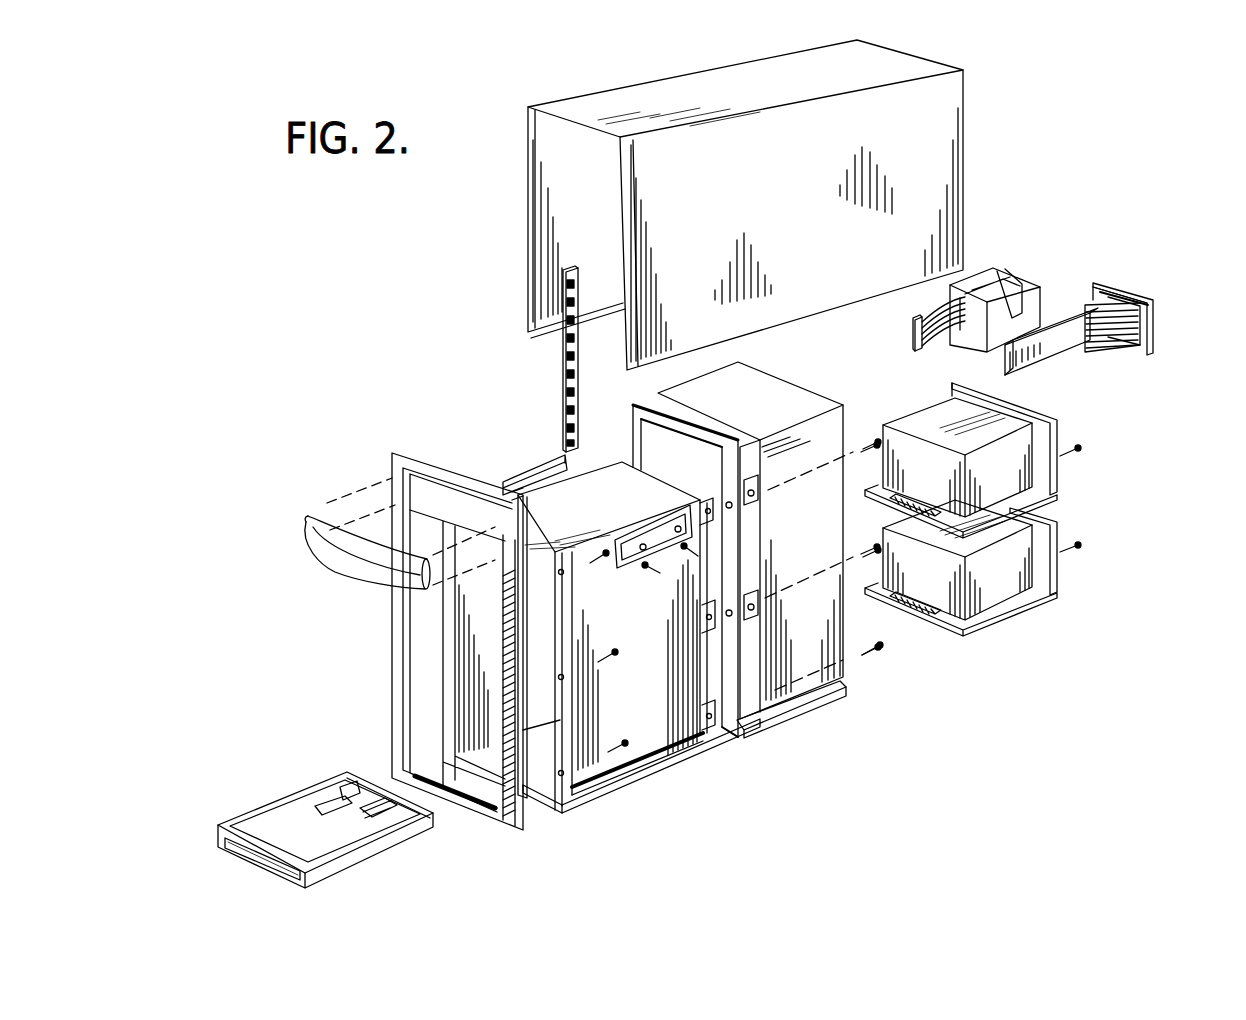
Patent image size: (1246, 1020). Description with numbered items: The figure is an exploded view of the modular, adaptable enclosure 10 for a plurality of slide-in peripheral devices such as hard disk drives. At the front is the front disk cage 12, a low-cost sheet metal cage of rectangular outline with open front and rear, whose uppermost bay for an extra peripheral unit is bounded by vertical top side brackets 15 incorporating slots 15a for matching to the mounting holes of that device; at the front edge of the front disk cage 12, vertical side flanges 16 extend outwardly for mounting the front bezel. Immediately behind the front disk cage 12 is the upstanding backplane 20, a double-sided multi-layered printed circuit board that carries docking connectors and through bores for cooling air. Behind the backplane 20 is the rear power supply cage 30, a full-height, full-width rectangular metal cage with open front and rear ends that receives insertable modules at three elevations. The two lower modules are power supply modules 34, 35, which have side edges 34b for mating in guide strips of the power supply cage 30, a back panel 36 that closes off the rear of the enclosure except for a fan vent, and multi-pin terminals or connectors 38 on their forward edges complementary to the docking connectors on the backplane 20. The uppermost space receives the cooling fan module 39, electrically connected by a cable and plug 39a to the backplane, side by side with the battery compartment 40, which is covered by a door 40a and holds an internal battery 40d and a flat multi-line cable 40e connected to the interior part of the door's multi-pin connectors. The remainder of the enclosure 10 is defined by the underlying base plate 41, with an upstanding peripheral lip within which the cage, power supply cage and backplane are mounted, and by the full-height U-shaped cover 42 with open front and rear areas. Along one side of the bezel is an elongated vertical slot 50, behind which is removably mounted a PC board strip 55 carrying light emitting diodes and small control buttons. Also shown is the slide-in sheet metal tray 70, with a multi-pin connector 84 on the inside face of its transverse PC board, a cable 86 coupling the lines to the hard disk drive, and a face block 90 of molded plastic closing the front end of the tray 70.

The enclosure 10 is at (478, 361).
The front disk cage 12 is at (657, 720).
The vertical top side brackets 15 is at (532, 461).
The slots 15a is at (520, 472).
The vertical side flanges 16 is at (597, 787).
The backplane 20 is at (730, 737).
The rear power supply cage 30 is at (826, 697).
The power supply module 34 is at (995, 577).
The side edges 34b is at (1032, 603).
The power supply module 35 is at (1060, 480).
The back panel 36 is at (1052, 423).
The multi-pin terminals or connectors 38 is at (922, 620).
The cooling fan module 39 is at (1023, 287).
The cable and plug 39a is at (911, 345).
The battery compartment 40 is at (1117, 305).
The door 40a is at (1150, 296).
The internal battery 40d is at (1060, 320).
The flat multi-line cable 40e is at (1097, 353).
The base plate 41 is at (599, 805).
The U-shaped cover 42 is at (523, 150).
The elongated vertical slot 50 is at (507, 832).
The PC board strip 55 is at (578, 370).
The tray 70 is at (324, 809).
The multi-pin connector 84 is at (400, 800).
The cable 86 is at (377, 827).
The face block 90 is at (252, 855).